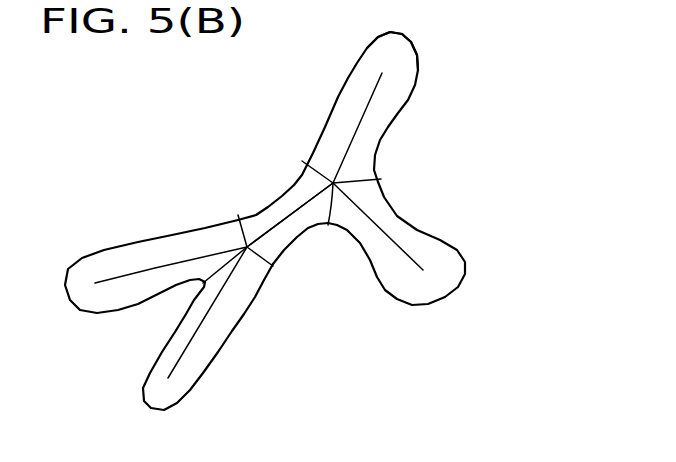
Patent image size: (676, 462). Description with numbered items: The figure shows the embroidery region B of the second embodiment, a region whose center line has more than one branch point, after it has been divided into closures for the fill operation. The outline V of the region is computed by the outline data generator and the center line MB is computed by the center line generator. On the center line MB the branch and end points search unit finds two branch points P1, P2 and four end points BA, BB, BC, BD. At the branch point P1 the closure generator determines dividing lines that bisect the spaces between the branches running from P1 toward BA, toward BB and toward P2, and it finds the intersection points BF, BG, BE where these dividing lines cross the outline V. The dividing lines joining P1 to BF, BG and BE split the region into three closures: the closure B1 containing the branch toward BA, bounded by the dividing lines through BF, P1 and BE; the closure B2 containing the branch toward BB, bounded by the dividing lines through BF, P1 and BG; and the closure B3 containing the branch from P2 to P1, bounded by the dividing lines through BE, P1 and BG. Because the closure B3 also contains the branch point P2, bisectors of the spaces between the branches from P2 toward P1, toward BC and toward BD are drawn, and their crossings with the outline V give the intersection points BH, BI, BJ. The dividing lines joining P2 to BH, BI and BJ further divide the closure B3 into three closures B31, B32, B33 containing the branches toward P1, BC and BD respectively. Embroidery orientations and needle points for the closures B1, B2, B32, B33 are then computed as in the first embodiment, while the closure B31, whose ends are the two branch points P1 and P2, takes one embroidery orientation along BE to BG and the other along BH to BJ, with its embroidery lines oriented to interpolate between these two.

The embroidery region B is at (470, 294).
The closure B1 is at (353, 80).
The closure B2 is at (438, 245).
The closure B3 is at (257, 197).
The closure B31 is at (296, 235).
The closure B32 is at (207, 350).
The closure B33 is at (138, 252).
The branch point P1 is at (333, 183).
The branch point P2 is at (247, 247).
The center line MB is at (375, 88).
The outline V is at (415, 57).
The end point BA is at (389, 50).
The end point BB is at (381, 242).
The end point BC is at (196, 326).
The end point BD is at (164, 281).
The intersection point BE is at (302, 162).
The intersection point BF is at (371, 175).
The intersection point BG is at (327, 223).
The intersection point BH is at (277, 272).
The intersection point BI is at (208, 281).
The intersection point BJ is at (234, 216).